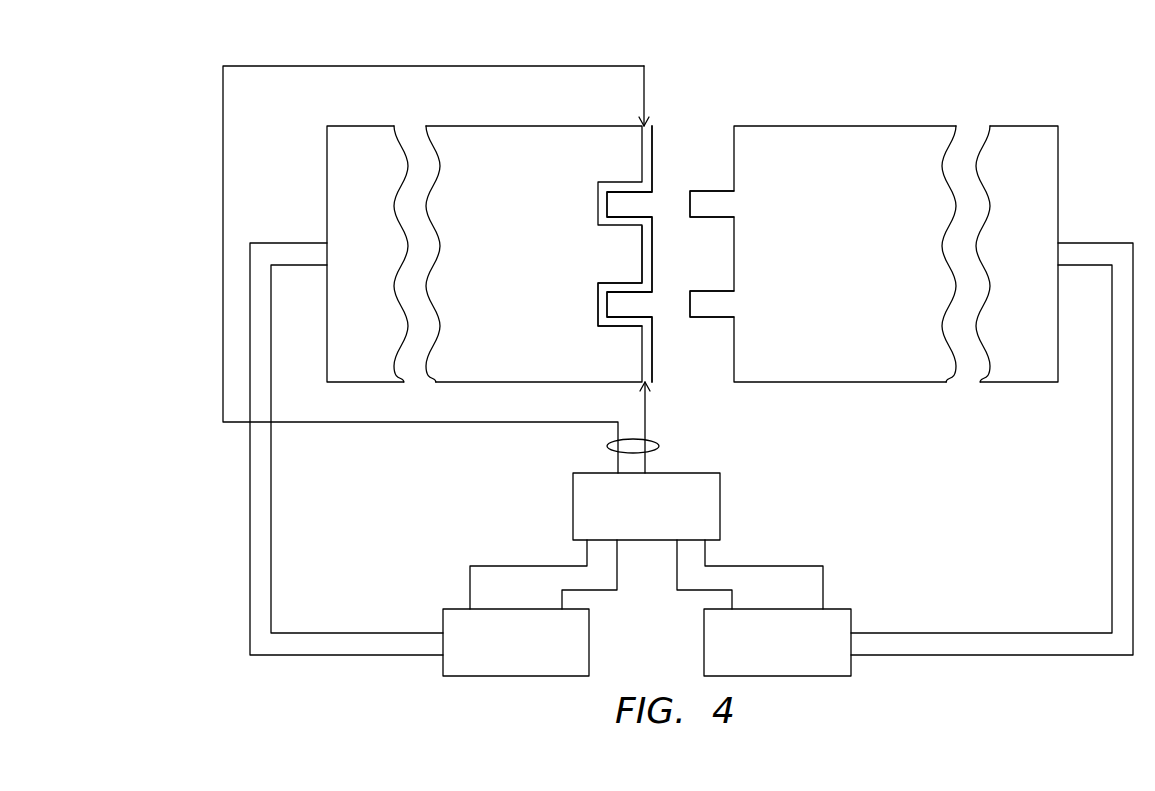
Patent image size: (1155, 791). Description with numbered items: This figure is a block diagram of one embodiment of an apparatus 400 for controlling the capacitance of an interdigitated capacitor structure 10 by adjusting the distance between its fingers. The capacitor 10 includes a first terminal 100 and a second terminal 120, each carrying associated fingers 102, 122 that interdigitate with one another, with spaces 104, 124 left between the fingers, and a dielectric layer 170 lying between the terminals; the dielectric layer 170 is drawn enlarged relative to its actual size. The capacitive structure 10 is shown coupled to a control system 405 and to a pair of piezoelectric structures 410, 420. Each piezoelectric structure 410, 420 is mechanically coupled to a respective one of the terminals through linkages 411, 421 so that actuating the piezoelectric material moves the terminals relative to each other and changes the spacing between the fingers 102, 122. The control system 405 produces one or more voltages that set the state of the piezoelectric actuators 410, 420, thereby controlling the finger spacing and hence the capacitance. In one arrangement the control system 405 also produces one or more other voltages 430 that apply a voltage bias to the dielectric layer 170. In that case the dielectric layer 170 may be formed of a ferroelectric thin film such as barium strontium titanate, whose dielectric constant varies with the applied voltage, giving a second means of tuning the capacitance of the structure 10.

The interdigitated capacitor structure 10 is at (705, 103).
The first terminal 100 is at (522, 126).
The fingers of the first terminal 102 is at (645, 241).
The spaces between fingers 104 is at (632, 306).
The second terminal 120 is at (890, 126).
The fingers of the second terminal 122 is at (720, 191).
The spaces between fingers 124 is at (687, 281).
The dielectric layer 170 is at (652, 135).
The apparatus 400 is at (1052, 97).
The control system 405 is at (713, 473).
The piezoelectric structure 410 is at (457, 607).
The linkage 411 is at (250, 516).
The piezoelectric structure 420 is at (836, 608).
The linkage 421 is at (1112, 490).
The voltage 430 is at (606, 446).